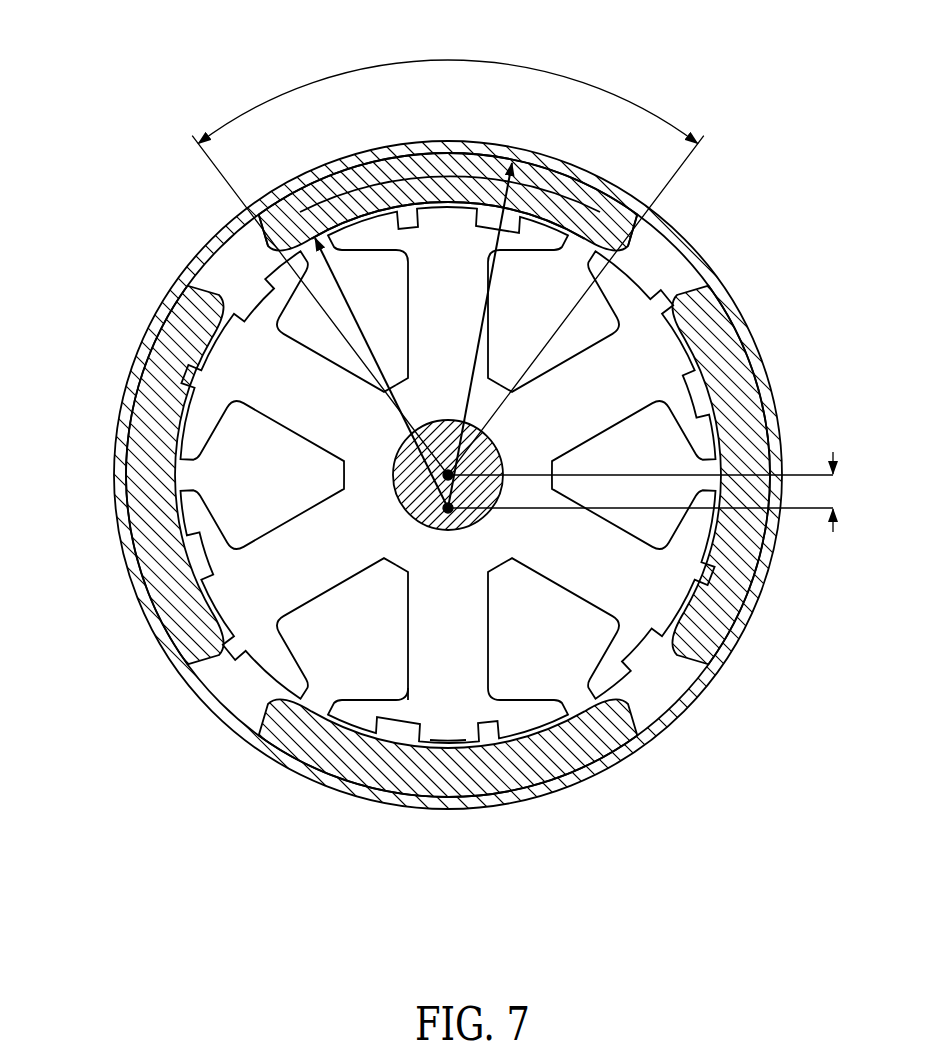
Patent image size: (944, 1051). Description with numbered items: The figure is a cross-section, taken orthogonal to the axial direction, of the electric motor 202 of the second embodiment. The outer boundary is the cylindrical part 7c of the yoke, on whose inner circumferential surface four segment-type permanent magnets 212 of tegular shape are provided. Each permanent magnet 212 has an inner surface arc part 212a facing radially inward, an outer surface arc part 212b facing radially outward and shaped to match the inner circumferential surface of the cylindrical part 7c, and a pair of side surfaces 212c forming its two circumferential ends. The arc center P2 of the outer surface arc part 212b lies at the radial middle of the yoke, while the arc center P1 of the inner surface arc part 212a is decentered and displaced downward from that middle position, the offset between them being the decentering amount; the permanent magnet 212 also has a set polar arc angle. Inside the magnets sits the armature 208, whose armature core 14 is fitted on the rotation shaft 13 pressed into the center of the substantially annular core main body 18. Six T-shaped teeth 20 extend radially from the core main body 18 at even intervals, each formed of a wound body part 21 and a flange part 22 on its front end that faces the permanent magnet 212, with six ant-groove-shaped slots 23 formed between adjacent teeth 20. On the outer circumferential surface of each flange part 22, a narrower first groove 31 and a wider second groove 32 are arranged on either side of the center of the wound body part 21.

The electric motor 202 is at (814, 200).
The permanent magnet 212 is at (566, 168).
The inner surface arc part 212a is at (377, 210).
The outer surface arc part 212b is at (385, 150).
The side surfaces 212c is at (262, 243).
The teeth 20 is at (692, 343).
The wound body part 21 is at (407, 660).
The flange part 22 is at (436, 745).
The slots 23 is at (578, 248).
The first groove 31 is at (196, 374).
The second groove 32 is at (236, 288).
The rotation shaft 13 is at (396, 515).
The arc center of the outer surface arc part P2 is at (452, 472).
The arc center of the inner surface arc part P1 is at (452, 510).
The core main body 18 is at (392, 568).
The cylindrical part 7c is at (177, 657).
The armature core 14 is at (249, 691).
The armature 208 is at (658, 670).